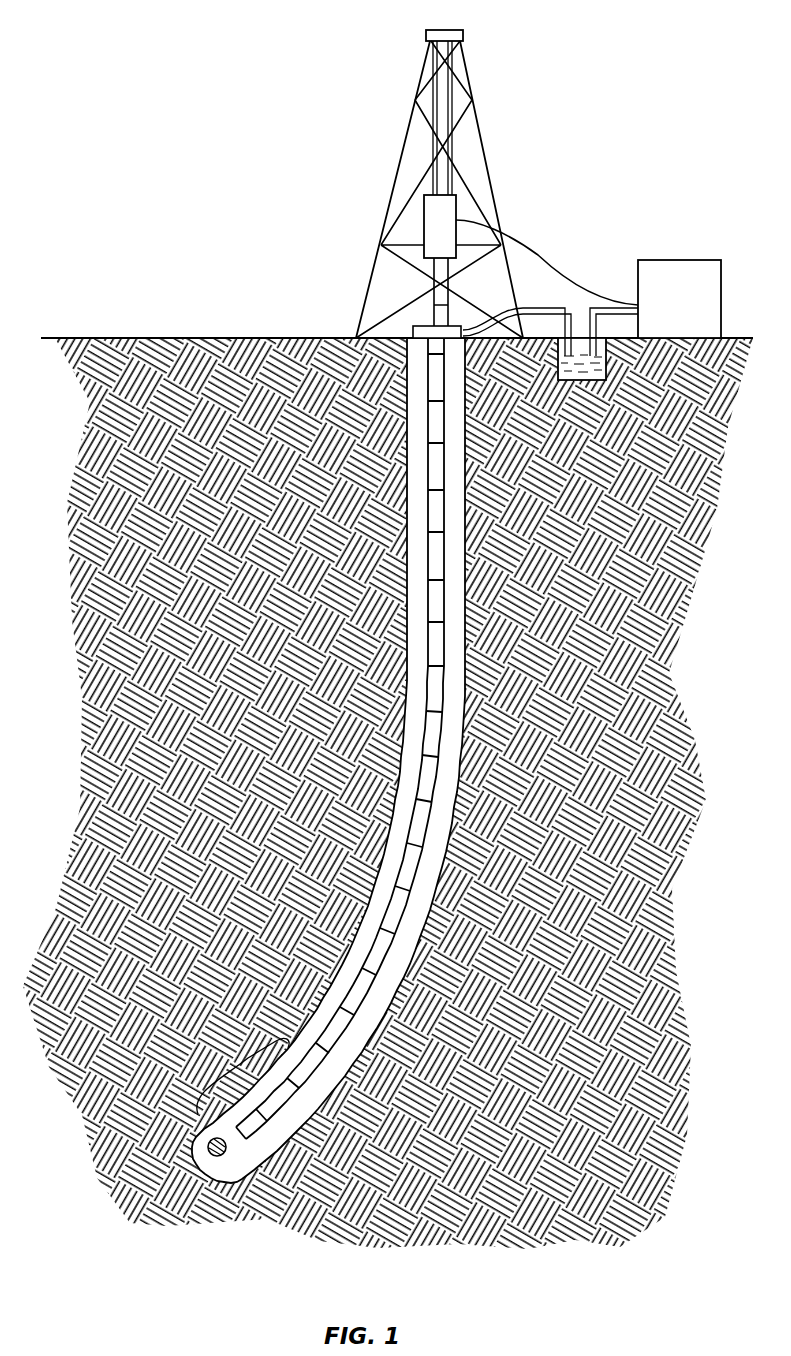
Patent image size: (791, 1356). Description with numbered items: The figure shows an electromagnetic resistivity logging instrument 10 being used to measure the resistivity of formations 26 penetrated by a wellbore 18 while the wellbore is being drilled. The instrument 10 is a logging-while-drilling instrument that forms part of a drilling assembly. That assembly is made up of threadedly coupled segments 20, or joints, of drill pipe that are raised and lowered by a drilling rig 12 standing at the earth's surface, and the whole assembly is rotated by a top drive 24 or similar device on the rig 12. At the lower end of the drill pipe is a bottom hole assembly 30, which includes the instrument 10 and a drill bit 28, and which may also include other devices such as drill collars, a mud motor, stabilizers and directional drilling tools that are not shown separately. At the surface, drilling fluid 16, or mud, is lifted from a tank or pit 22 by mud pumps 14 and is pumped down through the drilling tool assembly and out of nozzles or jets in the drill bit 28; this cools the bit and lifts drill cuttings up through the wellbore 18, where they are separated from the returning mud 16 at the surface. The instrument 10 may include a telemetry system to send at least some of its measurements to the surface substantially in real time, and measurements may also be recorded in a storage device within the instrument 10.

The EM resistivity logging instrument 10 is at (308, 1073).
The drilling rig 12 is at (471, 128).
The mud pumps 14 is at (675, 252).
The drilling fluid 16 is at (622, 348).
The wellbore 18 is at (407, 478).
The segments of drill pipe 20 is at (431, 458).
The tank or pit 22 is at (585, 373).
The top drive 24 is at (448, 203).
The formations 26 is at (679, 490).
The drill bit 28 is at (194, 1148).
The bottom hole assembly 30 is at (236, 1058).